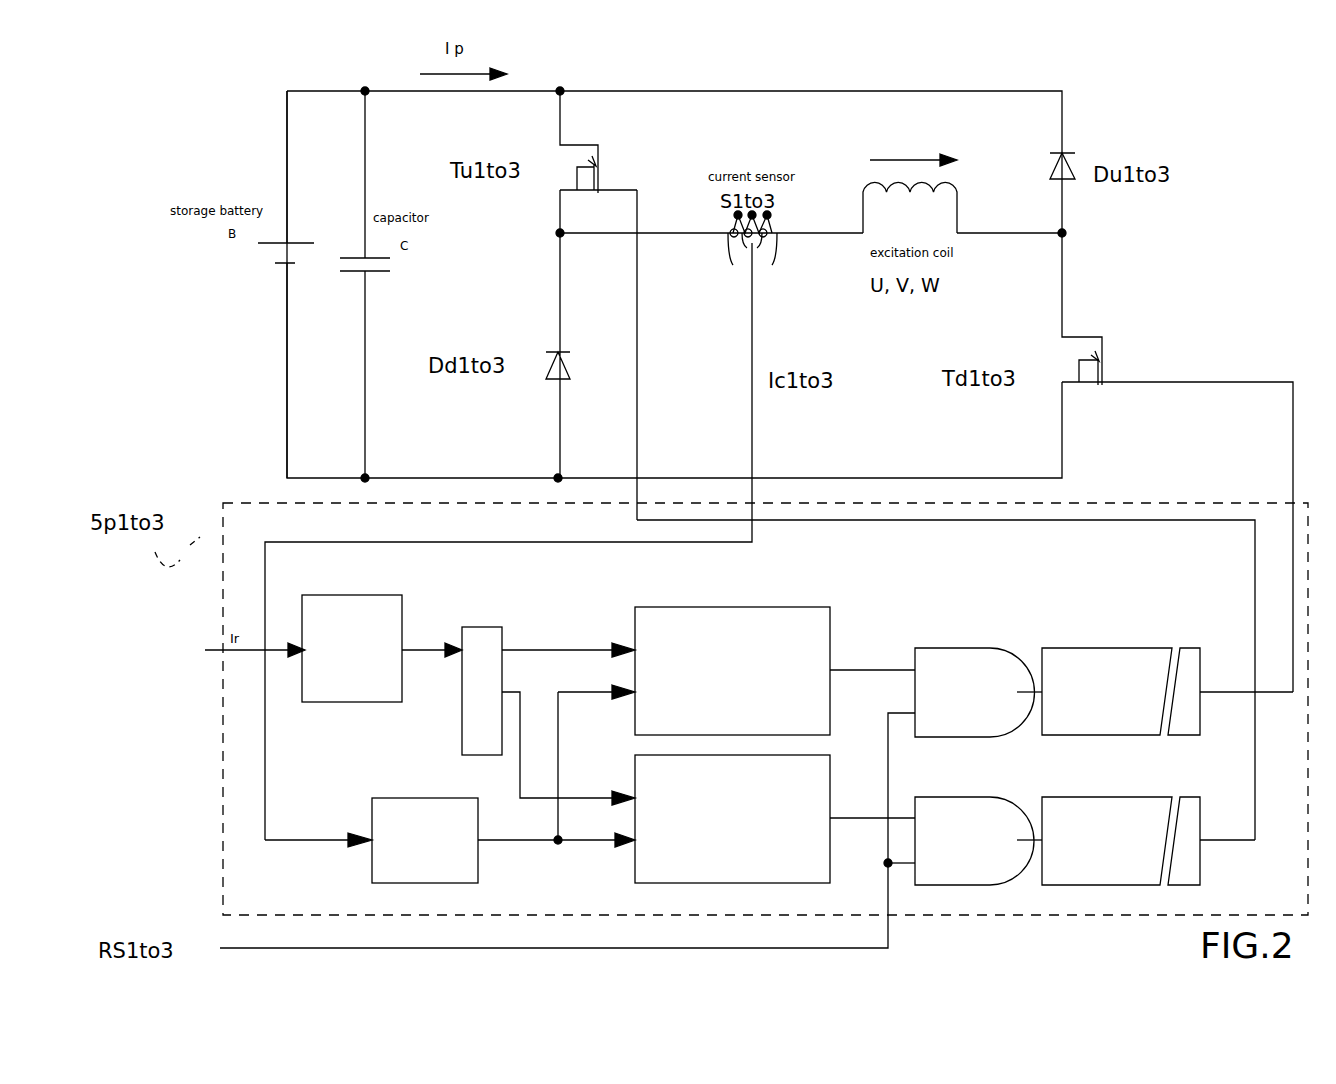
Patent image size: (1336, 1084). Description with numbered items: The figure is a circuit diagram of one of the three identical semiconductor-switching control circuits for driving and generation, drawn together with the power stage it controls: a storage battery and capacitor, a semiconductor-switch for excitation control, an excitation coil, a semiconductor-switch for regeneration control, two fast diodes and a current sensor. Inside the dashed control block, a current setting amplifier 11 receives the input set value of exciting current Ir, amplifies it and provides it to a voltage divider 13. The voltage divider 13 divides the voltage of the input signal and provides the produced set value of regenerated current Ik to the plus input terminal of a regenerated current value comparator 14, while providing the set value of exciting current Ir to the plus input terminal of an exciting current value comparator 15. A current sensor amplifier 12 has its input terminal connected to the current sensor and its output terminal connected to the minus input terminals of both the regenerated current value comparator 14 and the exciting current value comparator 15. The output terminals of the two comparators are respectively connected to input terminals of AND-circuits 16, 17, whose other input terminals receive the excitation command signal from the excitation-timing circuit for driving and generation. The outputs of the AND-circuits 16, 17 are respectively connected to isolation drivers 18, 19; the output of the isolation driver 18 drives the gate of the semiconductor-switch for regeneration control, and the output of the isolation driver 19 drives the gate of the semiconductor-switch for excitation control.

The current setting amplifier 11 is at (402, 615).
The current sensor amplifier 12 is at (400, 797).
The voltage divider 13 is at (502, 635).
The regenerated current value comparator 14 is at (833, 627).
The exciting current value comparator 15 is at (833, 795).
The AND-circuit 16 is at (965, 648).
The AND-circuit 17 is at (994, 765).
The isolation driver 18 is at (1140, 648).
The isolation driver 19 is at (1200, 872).